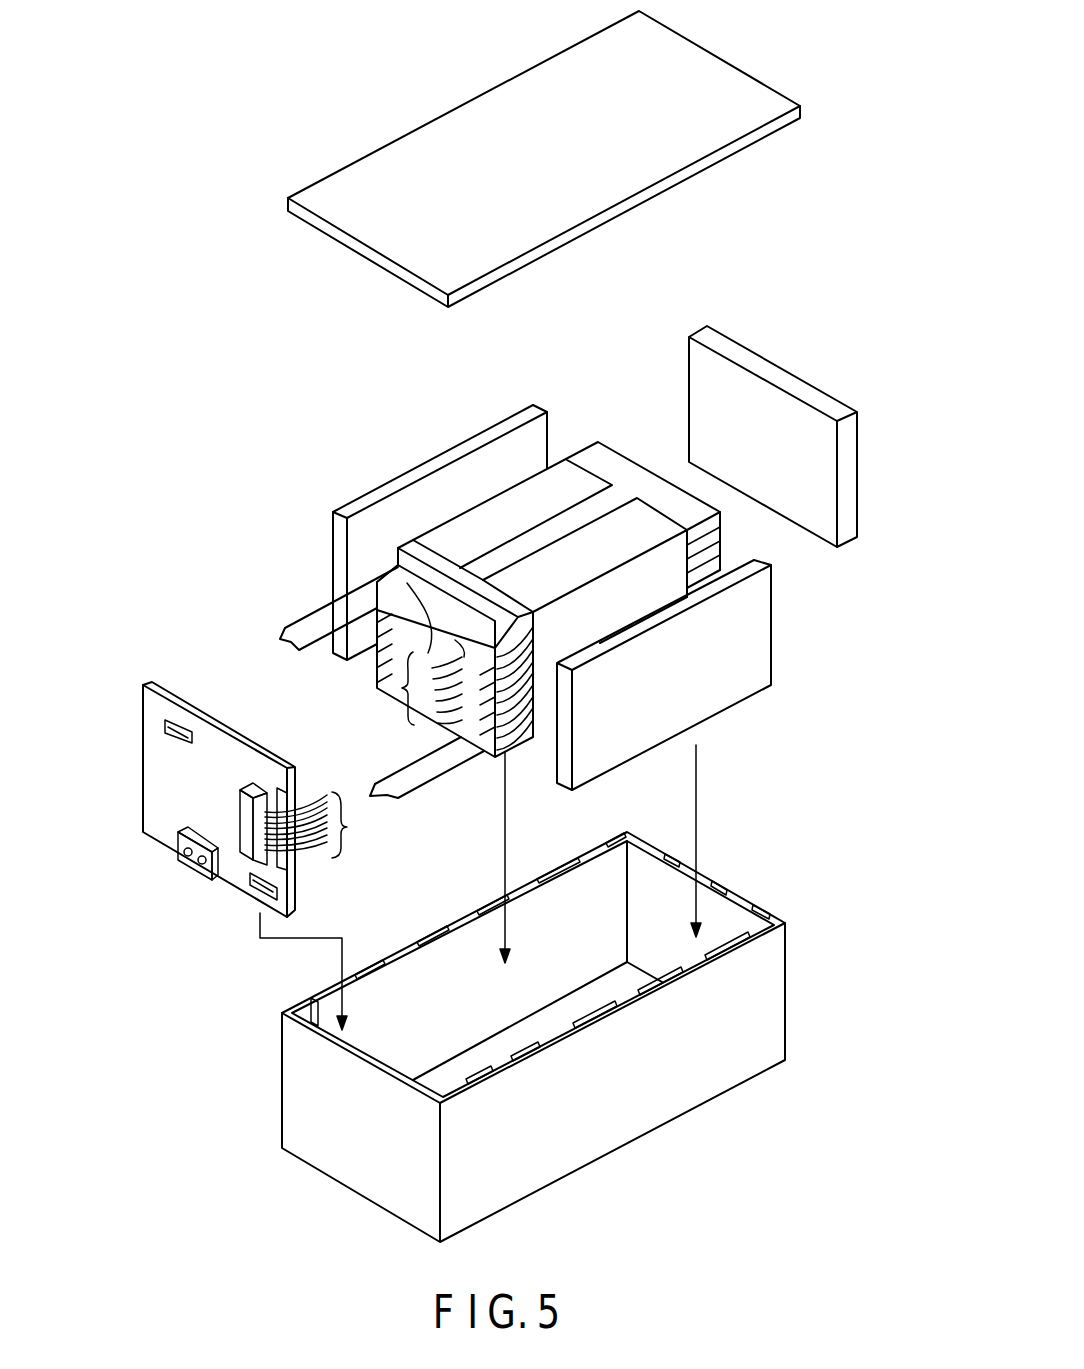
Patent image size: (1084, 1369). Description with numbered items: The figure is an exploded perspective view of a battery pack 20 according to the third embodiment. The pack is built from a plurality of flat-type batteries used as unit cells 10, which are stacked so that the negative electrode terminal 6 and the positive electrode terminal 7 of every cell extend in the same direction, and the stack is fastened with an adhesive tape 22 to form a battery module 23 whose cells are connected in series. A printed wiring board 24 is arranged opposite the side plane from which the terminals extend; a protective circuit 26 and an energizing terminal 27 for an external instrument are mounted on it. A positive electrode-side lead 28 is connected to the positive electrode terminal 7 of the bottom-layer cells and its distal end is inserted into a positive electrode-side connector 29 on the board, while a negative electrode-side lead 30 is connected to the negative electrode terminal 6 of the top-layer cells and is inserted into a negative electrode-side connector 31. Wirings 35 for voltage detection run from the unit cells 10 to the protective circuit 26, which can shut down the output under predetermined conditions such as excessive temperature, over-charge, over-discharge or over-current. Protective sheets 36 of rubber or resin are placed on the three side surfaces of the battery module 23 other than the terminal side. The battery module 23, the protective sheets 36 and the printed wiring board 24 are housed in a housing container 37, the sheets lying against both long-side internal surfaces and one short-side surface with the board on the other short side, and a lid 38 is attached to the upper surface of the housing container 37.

The negative electrode terminal 6 is at (377, 579).
The positive electrode terminal 7 is at (465, 640).
The flat-type battery 10 is at (700, 523).
The battery pack 20 is at (187, 189).
The adhesive tape 22 is at (627, 532).
The battery module 23 is at (489, 503).
The printed wiring board 24 is at (178, 692).
The protective circuit 26 is at (253, 787).
The energizing terminal 27 is at (202, 868).
The positive electrode-side lead 28 is at (421, 786).
The positive electrode-side connector 29 is at (278, 890).
The negative electrode-side lead 30 is at (292, 629).
The negative electrode-side connector 31 is at (187, 728).
The wirings for voltage detection 35 is at (402, 688).
The protective sheet 36 is at (401, 487).
The housing container 37 is at (770, 1000).
The lid 38 is at (738, 92).